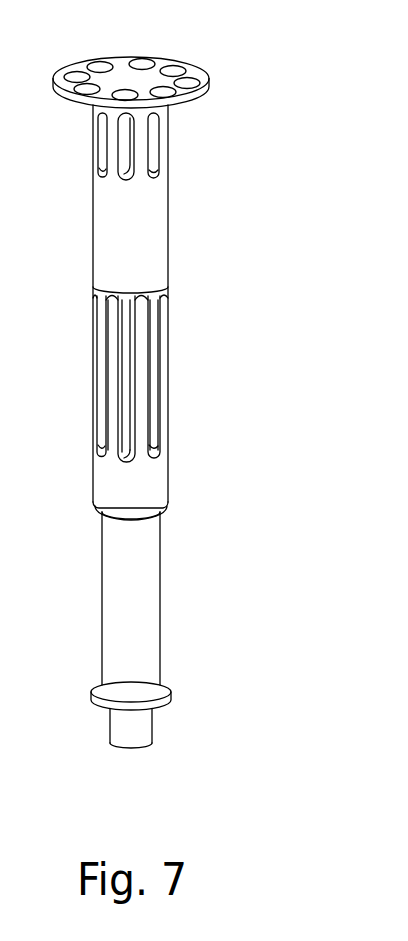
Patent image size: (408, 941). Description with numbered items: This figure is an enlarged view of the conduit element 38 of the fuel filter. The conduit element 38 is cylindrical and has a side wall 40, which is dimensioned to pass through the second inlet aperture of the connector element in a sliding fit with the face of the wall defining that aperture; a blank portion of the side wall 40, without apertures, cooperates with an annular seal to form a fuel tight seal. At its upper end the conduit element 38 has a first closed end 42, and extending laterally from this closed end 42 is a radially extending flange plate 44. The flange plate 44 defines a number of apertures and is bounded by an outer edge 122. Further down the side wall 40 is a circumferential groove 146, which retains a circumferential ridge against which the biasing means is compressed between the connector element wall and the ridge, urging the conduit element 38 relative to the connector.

The conduit element 38 is at (170, 377).
The side wall 40 is at (168, 242).
The first closed end 42 is at (170, 72).
The flange plate 44 is at (203, 72).
The outer edge 122 is at (200, 97).
The circumferential groove 146 is at (168, 284).